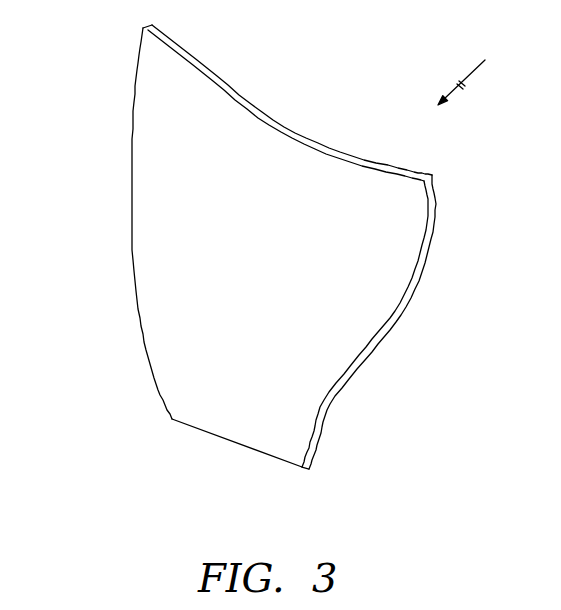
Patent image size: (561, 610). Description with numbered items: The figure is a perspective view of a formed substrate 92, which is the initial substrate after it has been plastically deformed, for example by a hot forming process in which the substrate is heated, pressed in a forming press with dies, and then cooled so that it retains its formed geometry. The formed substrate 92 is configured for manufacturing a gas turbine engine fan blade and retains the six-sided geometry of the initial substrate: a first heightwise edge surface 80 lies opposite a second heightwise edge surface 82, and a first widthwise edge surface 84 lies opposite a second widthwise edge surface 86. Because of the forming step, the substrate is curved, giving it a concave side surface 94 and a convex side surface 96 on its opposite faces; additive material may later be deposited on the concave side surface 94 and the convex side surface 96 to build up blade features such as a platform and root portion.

The first heightwise edge surface 80 is at (410, 295).
The second heightwise edge surface 82 is at (132, 233).
The first widthwise edge surface 84 is at (248, 107).
The second widthwise edge surface 86 is at (228, 438).
The formed substrate 92 is at (478, 67).
The concave side surface 94 is at (308, 138).
The convex side surface 96 is at (245, 213).